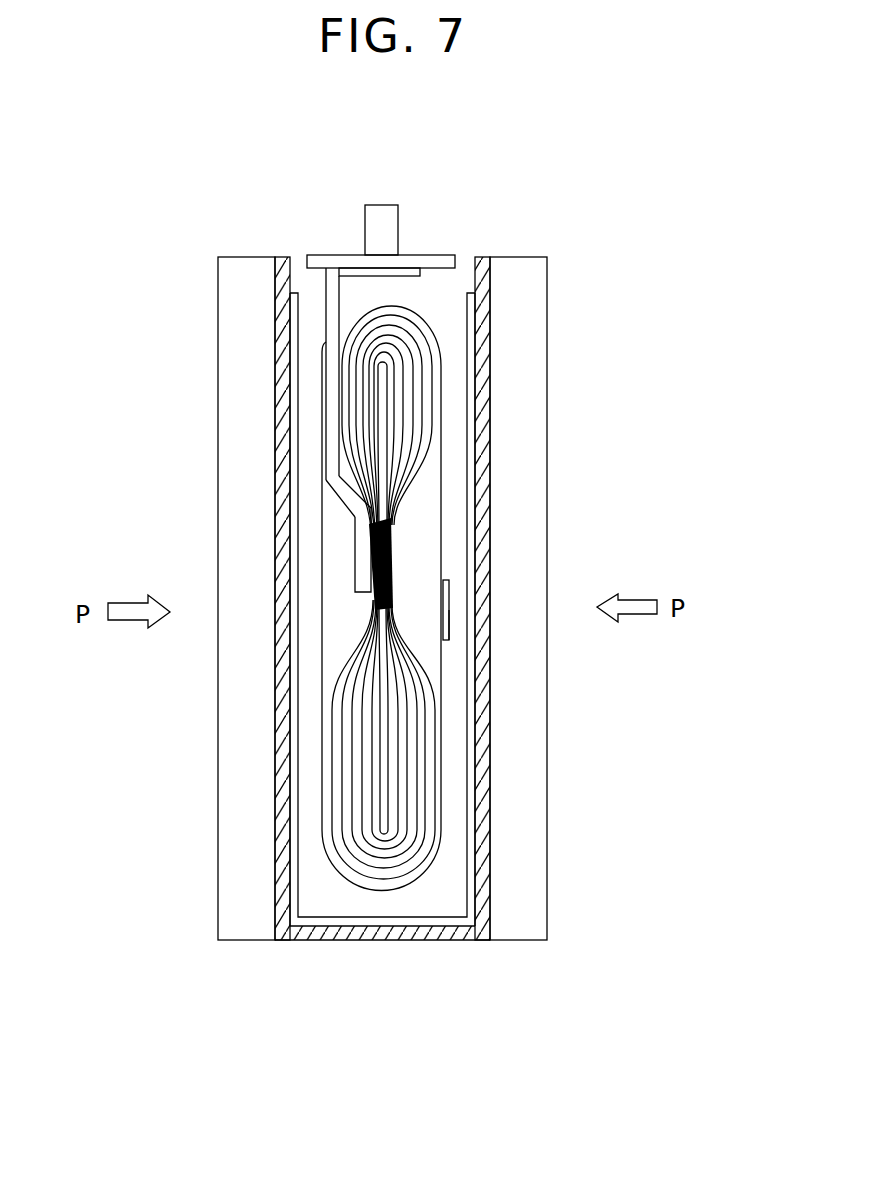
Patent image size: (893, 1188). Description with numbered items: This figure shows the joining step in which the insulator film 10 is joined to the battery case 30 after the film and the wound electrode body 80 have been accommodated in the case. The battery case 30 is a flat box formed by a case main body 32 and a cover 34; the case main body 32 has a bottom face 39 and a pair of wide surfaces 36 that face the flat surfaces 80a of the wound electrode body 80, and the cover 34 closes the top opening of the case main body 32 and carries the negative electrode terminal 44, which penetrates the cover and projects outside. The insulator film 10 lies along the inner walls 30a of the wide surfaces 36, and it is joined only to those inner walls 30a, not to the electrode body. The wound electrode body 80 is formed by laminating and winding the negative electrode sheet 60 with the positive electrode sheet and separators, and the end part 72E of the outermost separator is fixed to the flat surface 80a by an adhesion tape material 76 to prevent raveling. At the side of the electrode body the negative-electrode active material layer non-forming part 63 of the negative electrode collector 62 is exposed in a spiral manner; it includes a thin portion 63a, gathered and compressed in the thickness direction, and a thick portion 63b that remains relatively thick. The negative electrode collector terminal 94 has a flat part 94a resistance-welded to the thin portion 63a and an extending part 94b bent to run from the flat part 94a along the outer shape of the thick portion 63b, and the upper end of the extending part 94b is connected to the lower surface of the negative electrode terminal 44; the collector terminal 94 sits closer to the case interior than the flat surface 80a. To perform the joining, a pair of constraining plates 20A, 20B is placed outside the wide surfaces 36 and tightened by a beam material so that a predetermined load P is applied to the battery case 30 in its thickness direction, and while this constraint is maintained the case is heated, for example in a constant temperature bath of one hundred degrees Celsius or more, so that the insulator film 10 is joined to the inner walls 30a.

The insulator film 10 is at (472, 387).
The constraining plate 20A is at (240, 932).
The constraining plate 20B is at (527, 932).
The battery case 30 is at (276, 278).
The inner wall 30a is at (282, 695).
The case main body 32 is at (490, 277).
The cover 34 is at (325, 256).
The wide surface 36 is at (275, 803).
The bottom face 39 is at (413, 940).
The negative electrode terminal 44 is at (399, 230).
The negative electrode sheet 60 is at (428, 322).
The negative electrode collector 62 is at (498, 649).
The negative-electrode active material layer non-forming part 63 is at (434, 413).
The thin portion 63a is at (395, 563).
The thick portion 63b is at (430, 438).
The end part 72E is at (450, 628).
The adhesion tape material 76 is at (450, 613).
The wound electrode body 80 is at (444, 342).
The flat surface 80a is at (322, 542).
The negative electrode collector terminal 94 is at (326, 484).
The flat part 94a is at (355, 572).
The extending part 94b is at (326, 418).